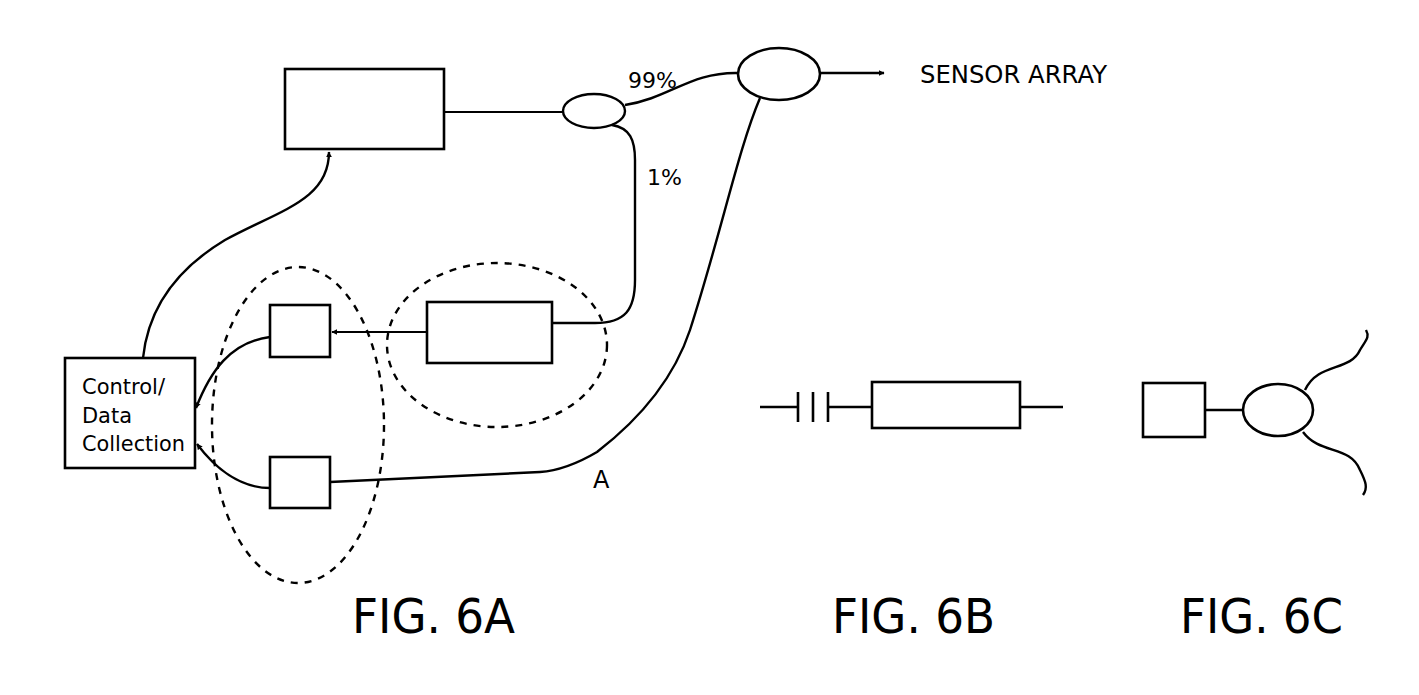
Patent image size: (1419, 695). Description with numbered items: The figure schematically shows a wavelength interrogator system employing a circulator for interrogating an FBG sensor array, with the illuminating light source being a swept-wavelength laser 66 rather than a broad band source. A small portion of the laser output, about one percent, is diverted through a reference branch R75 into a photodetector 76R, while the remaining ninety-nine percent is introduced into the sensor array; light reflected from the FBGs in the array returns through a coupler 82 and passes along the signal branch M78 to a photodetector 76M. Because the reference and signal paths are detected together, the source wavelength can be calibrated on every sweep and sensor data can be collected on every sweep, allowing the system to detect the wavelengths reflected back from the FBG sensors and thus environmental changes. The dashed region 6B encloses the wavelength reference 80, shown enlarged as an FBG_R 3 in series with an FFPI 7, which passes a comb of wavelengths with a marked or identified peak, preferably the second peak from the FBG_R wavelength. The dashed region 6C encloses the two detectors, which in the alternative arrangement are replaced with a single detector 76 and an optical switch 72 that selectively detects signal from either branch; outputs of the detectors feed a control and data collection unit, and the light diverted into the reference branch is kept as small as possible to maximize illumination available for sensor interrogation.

In FIG. 6A, the swept-wavelength laser 66 is at (412, 135).
In FIG. 6A, the optical coupler 82 is at (803, 86).
In FIG. 6A, the reference detector / optical component 80 is at (505, 353).
In FIG. 6A, the photodetector 76R is at (318, 343).
In FIG. 6A, the photodetector 76M is at (300, 495).
In FIG. 6A, the wavelength reference 6B is at (502, 267).
In FIG. 6A, the alternative photodetection system 6C is at (230, 523).
In FIG. 6B, the FBG_R 3 is at (805, 422).
In FIG. 6B, the FFPI 7 is at (907, 415).
In FIG. 6C, the single detector 76 is at (1180, 427).
In FIG. 6C, the optical switch 72 is at (1278, 427).
In FIG. 6C, the reference branch R75 is at (1340, 350).
In FIG. 6C, the signal branch M M78 is at (1344, 475).